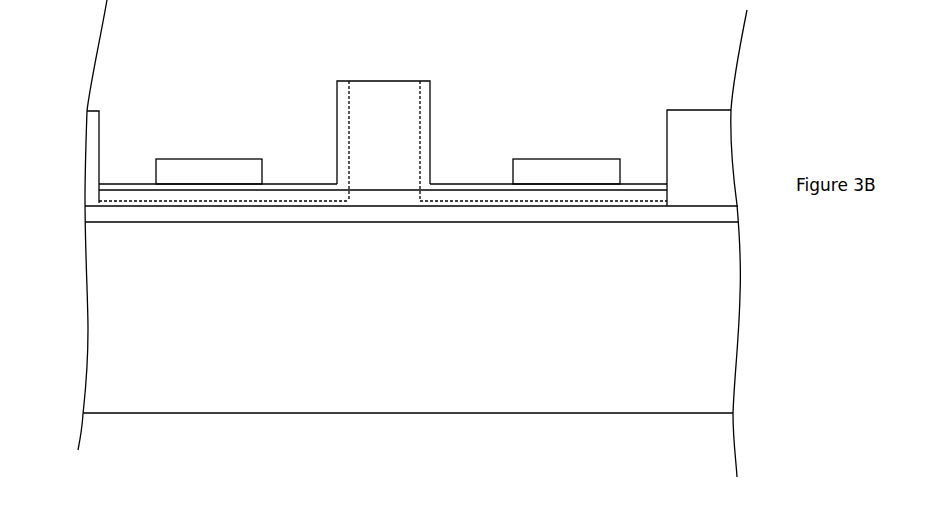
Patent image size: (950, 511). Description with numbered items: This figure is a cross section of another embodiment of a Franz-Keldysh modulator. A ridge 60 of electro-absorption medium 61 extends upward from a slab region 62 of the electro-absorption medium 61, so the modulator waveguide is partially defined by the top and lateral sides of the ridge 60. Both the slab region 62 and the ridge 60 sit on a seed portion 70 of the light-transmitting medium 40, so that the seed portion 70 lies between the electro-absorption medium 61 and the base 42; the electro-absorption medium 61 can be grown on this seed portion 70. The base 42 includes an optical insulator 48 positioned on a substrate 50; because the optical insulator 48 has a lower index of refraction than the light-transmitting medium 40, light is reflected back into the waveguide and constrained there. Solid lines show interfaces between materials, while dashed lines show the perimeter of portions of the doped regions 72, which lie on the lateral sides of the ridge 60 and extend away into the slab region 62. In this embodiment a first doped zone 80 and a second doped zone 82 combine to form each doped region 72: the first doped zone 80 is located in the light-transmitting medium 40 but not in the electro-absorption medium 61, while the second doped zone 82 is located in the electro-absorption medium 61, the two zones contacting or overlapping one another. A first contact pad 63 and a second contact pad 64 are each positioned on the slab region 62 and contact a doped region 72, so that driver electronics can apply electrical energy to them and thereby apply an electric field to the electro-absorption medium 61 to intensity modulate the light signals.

The light-transmitting medium 40 is at (697, 125).
The base 42 is at (748, 414).
The optical insulator 48 is at (701, 213).
The substrate 50 is at (187, 398).
The ridge 60 is at (430, 66).
The electro-absorption medium 61 is at (409, 89).
The slab region 62 is at (337, 66).
The first contact pad 63 is at (207, 172).
The second contact pad 64 is at (562, 168).
The seed portion 70 is at (667, 230).
The doped regions 72 is at (360, 119).
The first doped zone 80 is at (117, 194).
The second doped zone 82 is at (342, 178).